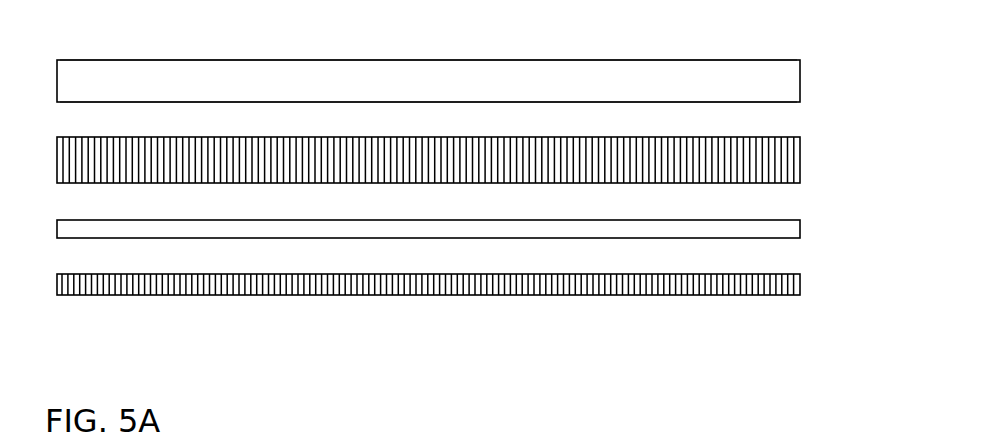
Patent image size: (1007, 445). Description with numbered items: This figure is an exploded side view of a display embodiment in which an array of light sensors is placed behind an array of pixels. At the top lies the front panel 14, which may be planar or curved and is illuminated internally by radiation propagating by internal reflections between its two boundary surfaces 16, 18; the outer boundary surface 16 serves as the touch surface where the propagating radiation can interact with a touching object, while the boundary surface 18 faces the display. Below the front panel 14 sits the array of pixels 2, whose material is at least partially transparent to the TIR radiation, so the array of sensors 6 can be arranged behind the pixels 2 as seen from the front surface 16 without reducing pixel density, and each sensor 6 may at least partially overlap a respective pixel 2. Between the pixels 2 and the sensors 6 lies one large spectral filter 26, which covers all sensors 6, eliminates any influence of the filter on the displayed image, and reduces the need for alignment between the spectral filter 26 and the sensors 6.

The front panel 14 is at (801, 70).
The outer boundary surface 16 is at (740, 60).
The boundary surface 18 is at (717, 103).
The array of pixels 2 is at (735, 165).
The spectral filter 26 is at (787, 229).
The array of sensors 6 is at (497, 296).